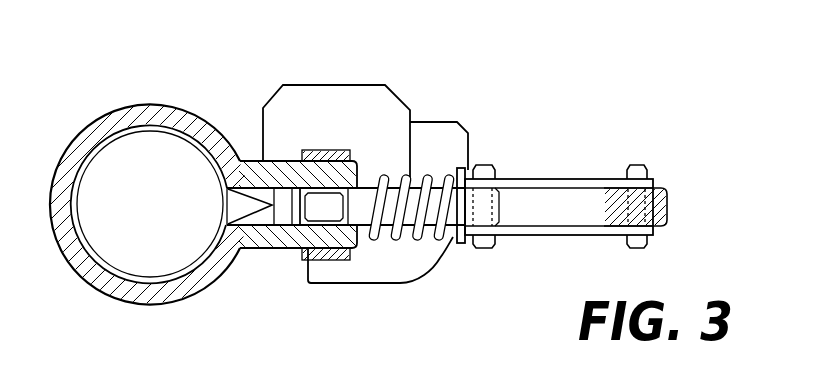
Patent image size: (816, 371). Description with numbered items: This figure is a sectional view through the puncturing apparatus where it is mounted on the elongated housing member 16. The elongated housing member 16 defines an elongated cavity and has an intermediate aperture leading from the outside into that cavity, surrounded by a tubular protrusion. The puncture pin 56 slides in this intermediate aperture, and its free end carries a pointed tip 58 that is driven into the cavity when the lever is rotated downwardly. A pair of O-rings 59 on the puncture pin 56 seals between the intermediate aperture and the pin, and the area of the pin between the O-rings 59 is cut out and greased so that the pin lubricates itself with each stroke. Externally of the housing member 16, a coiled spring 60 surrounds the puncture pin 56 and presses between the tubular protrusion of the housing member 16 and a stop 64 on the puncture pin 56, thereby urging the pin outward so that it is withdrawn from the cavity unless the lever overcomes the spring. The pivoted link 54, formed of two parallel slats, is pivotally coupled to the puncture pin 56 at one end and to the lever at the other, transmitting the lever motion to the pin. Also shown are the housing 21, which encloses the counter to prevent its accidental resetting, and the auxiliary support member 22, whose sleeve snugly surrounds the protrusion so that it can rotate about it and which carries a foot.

The elongated housing member 16 is at (115, 111).
The housing 21 is at (297, 105).
The auxiliary support member 22 is at (425, 270).
The pivoted link 54 is at (577, 180).
The puncture pin 56 is at (375, 178).
The pointed tip 58 is at (228, 197).
The O-rings 59 is at (283, 163).
The coiled spring 60 is at (404, 177).
The stop 64 is at (461, 168).